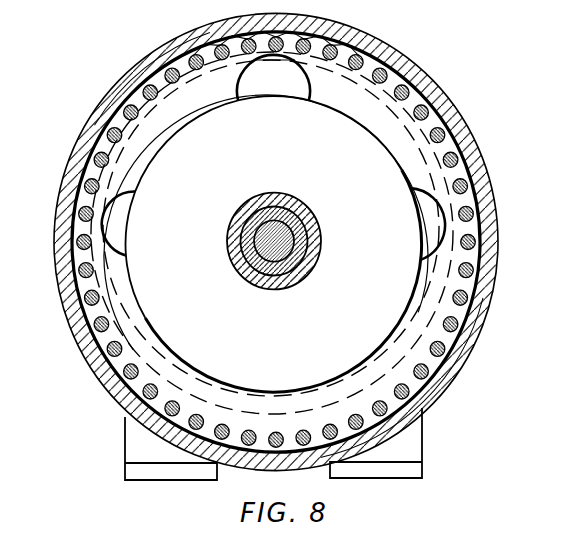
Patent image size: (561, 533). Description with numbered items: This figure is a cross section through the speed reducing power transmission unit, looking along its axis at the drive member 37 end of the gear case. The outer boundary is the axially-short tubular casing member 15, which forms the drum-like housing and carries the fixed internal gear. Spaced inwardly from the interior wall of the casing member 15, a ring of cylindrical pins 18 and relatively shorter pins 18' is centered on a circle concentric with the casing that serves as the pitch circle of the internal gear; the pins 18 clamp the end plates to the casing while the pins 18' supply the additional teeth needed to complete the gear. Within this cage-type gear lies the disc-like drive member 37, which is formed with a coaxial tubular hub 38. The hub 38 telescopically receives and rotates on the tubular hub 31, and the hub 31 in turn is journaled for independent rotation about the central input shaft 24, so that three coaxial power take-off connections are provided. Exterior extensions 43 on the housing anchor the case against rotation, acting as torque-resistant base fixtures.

The tubular casing member 15 is at (379, 59).
The cylindrical pins 18 is at (255, 223).
The shorter pins 18' is at (246, 250).
The shaft 24 is at (284, 237).
The tubular hub 31 is at (298, 222).
The drive member 37 is at (273, 223).
The tubular hub 38 is at (273, 195).
The exterior extension 43 is at (133, 470).